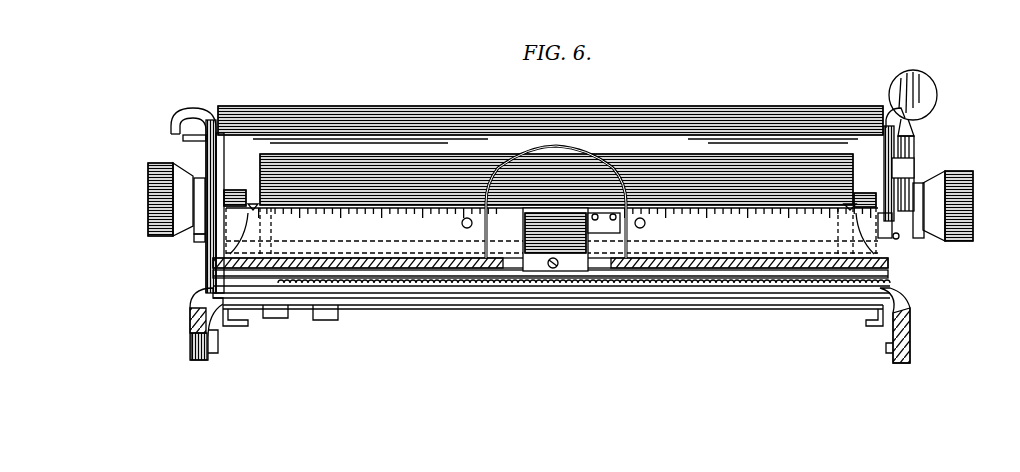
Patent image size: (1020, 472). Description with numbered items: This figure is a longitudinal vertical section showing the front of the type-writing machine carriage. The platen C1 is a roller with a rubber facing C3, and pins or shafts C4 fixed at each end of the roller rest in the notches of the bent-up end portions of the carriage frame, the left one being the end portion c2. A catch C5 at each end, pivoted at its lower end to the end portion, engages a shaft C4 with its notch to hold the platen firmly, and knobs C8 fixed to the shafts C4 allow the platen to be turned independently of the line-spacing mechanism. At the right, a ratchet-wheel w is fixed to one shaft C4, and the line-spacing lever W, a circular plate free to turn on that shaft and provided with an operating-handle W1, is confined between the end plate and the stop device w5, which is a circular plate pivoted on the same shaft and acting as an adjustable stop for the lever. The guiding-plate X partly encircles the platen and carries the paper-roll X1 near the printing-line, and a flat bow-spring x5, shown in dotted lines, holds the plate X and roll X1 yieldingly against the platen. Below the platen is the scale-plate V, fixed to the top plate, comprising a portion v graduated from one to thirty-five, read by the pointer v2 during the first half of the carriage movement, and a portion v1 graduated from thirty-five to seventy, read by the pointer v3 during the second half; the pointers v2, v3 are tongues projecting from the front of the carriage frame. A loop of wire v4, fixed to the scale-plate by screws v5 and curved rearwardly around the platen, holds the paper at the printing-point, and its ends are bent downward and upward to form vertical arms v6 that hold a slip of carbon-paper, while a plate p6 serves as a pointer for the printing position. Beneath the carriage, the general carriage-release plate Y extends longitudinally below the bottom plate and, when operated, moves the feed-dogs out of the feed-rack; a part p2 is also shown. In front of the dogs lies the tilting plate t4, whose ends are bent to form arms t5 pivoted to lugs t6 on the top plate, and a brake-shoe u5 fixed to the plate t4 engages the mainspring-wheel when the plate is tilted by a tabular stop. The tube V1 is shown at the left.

The guiding-plate X is at (550, 124).
The platen C1 is at (556, 179).
The scale-plate V is at (552, 232).
The scale-plate portion v is at (345, 239).
The screws v5 is at (550, 234).
The vertical arms v6 is at (572, 247).
The scale-plate portion v1 is at (707, 247).
The spring x5 is at (742, 276).
The general carriage-release plate Y is at (368, 290).
The brake-shoe u5 is at (317, 312).
The tilting plate t4 is at (263, 310).
The rail p2 is at (598, 272).
The lugs t6 is at (192, 352).
The arms t5 is at (212, 332).
The rubber facing C3 is at (888, 245).
The bent tube V1 is at (178, 108).
The catch C5 is at (175, 130).
The knobs C8 is at (140, 198).
The end portion c2 is at (197, 236).
The pins or shafts C4 is at (216, 184).
The pointer v2 is at (247, 197).
The pointer v3 is at (850, 195).
The operating-handle W1 is at (928, 92).
The line-spacing lever W is at (906, 138).
The stop device w5 is at (906, 162).
The ratchet-wheel w is at (892, 232).
The paper-guide v4 is at (560, 141).
The paper-roll X1 is at (541, 232).
The plate p6 is at (568, 205).